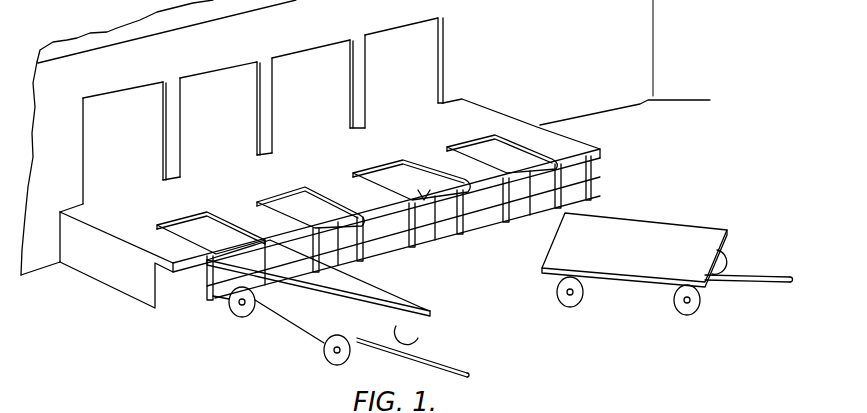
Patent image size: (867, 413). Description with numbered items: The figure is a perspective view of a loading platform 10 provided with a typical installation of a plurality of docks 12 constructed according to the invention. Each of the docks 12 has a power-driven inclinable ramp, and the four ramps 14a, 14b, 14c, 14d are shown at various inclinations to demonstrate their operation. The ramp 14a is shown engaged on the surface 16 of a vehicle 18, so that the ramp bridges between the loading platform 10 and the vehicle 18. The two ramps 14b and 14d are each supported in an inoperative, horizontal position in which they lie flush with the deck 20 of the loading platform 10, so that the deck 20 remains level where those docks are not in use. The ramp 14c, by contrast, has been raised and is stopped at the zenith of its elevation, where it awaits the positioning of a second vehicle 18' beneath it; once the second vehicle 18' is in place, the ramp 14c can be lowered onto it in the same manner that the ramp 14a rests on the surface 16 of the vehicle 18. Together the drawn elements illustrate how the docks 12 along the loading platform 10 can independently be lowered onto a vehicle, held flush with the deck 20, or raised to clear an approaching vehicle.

The loading platform 10 is at (537, 107).
The docks 12 is at (515, 227).
The power-driven inclinable ramp 14a is at (242, 238).
The power-driven inclinable ramp 14b is at (340, 217).
The power-driven inclinable ramp 14c is at (442, 187).
The power-driven inclinable ramp 14d is at (537, 165).
The surface 16 is at (373, 294).
The vehicle 18 is at (338, 308).
The second vehicle 18' is at (667, 252).
The deck 20 is at (473, 110).